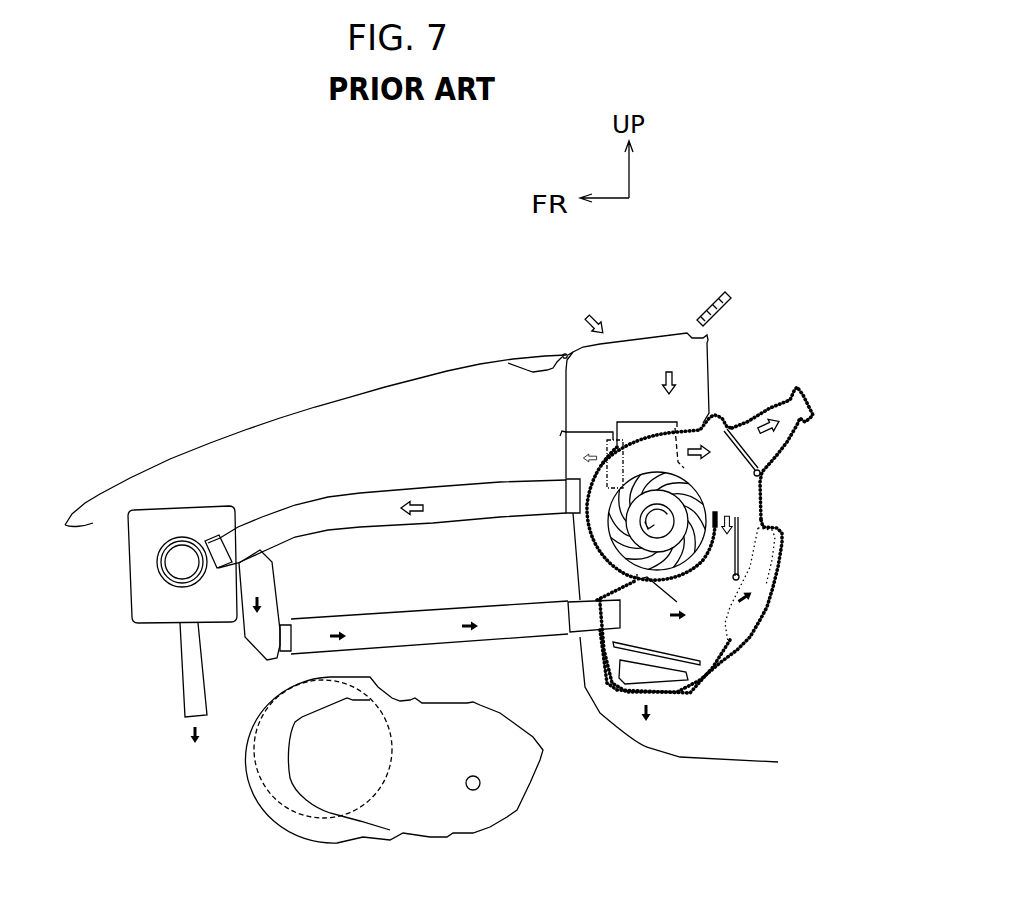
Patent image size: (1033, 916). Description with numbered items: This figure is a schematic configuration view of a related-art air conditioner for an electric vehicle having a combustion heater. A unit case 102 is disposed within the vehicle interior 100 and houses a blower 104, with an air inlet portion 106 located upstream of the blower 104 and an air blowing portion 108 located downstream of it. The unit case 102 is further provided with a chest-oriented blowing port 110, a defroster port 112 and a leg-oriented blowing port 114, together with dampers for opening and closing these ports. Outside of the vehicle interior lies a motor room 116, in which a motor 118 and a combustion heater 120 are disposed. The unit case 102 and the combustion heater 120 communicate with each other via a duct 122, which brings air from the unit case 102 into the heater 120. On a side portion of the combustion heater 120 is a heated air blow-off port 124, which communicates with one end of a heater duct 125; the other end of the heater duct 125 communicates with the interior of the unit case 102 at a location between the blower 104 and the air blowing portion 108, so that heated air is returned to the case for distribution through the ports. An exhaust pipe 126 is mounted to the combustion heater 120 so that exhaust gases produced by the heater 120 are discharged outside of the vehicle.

The vehicle interior 100 is at (892, 523).
The unit case 102 is at (771, 621).
The blower 104 is at (700, 493).
The air inlet portion 106 is at (660, 430).
The air blowing portion 108 is at (707, 620).
The chest-oriented blowing port 110 is at (803, 400).
The defroster port 112 is at (780, 538).
The leg-oriented blowing port 114 is at (667, 684).
The motor room 116 is at (439, 451).
The motor 118 is at (252, 790).
The combustion heater 120 is at (114, 600).
The duct 122 is at (352, 494).
The heated air blow-off port 124 is at (280, 583).
The heater duct 125 is at (405, 612).
The exhaust pipe 126 is at (183, 698).